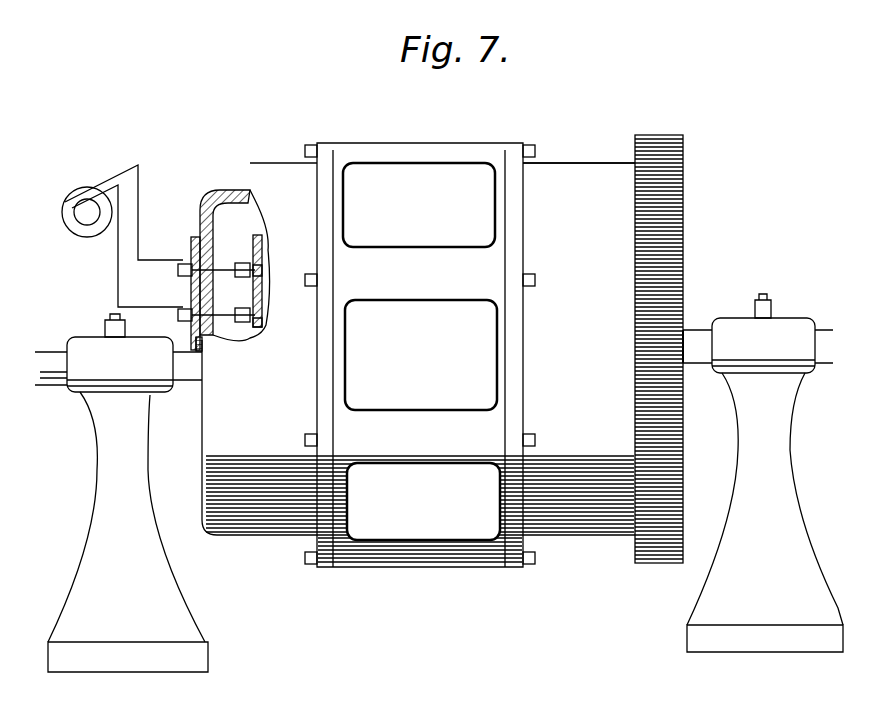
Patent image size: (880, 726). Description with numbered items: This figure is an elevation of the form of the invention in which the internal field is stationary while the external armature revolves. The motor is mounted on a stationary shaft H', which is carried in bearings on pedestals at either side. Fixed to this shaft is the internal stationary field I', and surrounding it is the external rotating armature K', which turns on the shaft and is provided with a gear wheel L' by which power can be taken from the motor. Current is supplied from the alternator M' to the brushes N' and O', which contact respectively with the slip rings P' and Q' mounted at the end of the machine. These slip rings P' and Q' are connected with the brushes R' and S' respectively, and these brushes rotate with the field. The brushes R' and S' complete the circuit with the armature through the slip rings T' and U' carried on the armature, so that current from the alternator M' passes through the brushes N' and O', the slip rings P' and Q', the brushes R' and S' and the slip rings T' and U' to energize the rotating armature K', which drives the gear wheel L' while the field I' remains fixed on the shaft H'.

The alternator M' is at (122, 228).
The brush N' is at (201, 271).
The brush O' is at (201, 321).
The slip ring P' is at (186, 286).
The slip ring Q' is at (169, 346).
The brush R' is at (238, 254).
The brush S' is at (240, 337).
The slip ring T' is at (277, 263).
The slip ring U' is at (274, 333).
The internal stationary field I' is at (246, 265).
The external rotating armature K' is at (579, 153).
The gear wheel L' is at (671, 333).
The stationary shaft H' is at (758, 330).